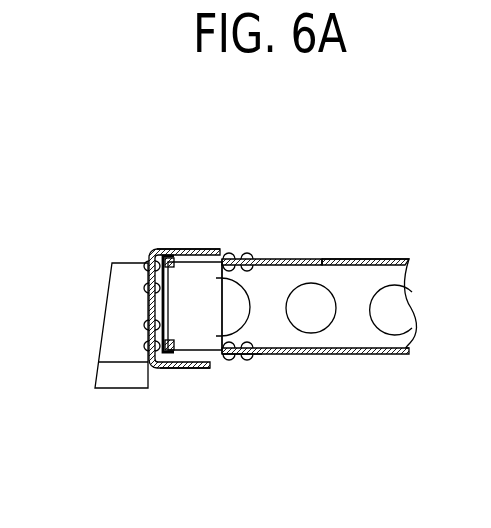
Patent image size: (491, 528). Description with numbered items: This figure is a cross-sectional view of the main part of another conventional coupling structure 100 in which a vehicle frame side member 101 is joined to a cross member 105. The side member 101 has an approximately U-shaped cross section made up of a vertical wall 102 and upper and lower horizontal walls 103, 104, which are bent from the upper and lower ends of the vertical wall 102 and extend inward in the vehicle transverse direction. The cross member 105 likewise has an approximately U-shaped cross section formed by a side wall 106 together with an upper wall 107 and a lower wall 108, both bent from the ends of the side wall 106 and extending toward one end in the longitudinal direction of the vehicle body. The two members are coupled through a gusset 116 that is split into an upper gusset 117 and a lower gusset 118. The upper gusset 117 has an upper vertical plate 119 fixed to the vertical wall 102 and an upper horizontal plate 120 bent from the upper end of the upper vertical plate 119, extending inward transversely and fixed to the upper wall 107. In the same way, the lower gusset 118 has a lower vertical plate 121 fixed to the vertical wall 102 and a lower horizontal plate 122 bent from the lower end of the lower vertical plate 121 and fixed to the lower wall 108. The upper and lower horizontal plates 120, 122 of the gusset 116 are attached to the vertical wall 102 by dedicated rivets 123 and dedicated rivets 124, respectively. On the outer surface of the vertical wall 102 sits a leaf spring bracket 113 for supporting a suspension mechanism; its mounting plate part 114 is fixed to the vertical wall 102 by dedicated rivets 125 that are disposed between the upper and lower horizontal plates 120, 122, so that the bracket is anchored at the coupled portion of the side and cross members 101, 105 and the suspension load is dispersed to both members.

The heat exchanger assembly 100 is at (406, 267).
The side member 101 is at (154, 247).
The vertical wall 102 is at (171, 301).
The upper horizontal wall 103 is at (226, 253).
The lower horizontal wall 104 is at (225, 362).
The cross member 105 is at (379, 259).
The side wall 106 is at (405, 338).
The upper wall 107 is at (325, 262).
The lower wall 108 is at (384, 355).
The leaf spring bracket 113 is at (103, 283).
The mounting plate part 114 is at (151, 255).
The gusset 116 is at (306, 244).
The upper gusset 117 is at (258, 254).
The lower gusset 118 is at (263, 362).
The upper vertical plate 119 is at (150, 264).
The upper horizontal plate 120 is at (166, 254).
The lower vertical plate 121 is at (147, 347).
The lower horizontal plate 122 is at (204, 365).
The dedicated rivets 123 is at (171, 257).
The dedicated rivets 124 is at (172, 353).
The dedicated rivets 125 is at (147, 325).